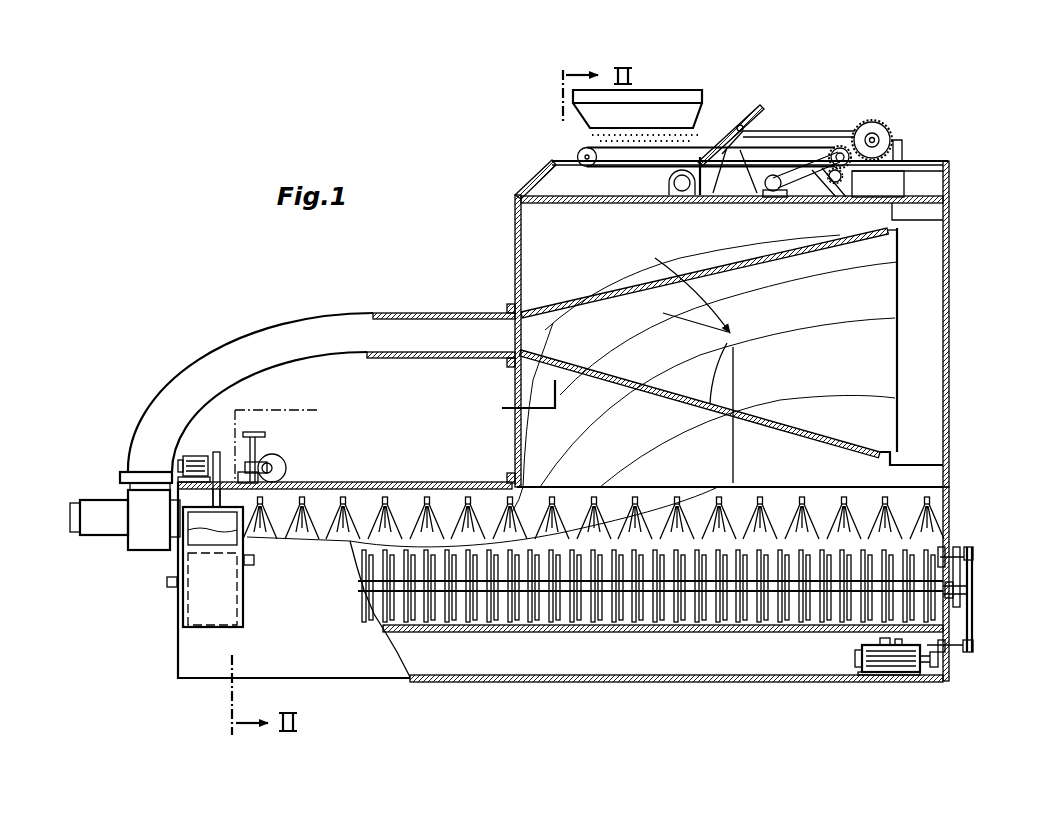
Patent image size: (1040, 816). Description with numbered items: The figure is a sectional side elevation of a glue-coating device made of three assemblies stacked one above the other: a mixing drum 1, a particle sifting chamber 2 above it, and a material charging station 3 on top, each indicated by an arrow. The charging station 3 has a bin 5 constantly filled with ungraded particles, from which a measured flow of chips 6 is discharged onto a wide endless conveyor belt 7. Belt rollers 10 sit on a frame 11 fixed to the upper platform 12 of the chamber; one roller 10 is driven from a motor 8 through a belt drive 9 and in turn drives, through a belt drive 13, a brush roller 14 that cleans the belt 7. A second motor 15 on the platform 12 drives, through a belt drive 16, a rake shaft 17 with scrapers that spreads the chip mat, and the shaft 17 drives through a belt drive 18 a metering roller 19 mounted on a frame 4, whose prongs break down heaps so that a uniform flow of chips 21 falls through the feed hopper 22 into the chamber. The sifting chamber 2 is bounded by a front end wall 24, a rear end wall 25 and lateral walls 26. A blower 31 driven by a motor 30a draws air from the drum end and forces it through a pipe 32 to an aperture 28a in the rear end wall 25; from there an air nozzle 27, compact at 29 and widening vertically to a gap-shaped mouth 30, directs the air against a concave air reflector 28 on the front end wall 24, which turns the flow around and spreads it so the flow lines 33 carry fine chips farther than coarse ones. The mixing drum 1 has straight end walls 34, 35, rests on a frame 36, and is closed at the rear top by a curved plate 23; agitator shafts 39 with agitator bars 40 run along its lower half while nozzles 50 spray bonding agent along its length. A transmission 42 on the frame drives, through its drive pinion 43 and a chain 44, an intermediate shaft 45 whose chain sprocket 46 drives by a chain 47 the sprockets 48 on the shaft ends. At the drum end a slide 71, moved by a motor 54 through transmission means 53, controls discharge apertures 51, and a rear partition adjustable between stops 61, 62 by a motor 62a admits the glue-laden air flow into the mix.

The mixing drum 1 is at (553, 660).
The particle sifting chamber 2 is at (962, 292).
The material charging station 3 is at (942, 124).
The frame 4 is at (905, 154).
The bin 5 is at (682, 98).
The flow of chips 6 is at (600, 133).
The conveyor belt 7 is at (628, 150).
The motor 8 is at (774, 178).
The belt drive 9 is at (804, 172).
The belt rollers 10 is at (580, 157).
The frame 11 is at (538, 180).
The upper platform 12 is at (623, 167).
The belt drive 13 is at (890, 172).
The brush roller 14 is at (820, 190).
The second motor 15 is at (672, 193).
The belt drive 16 is at (701, 196).
The rake shaft 17 is at (750, 112).
The belt drive 18 is at (858, 126).
The metering roller 19 is at (882, 138).
The flow of chips 21 is at (878, 206).
The feed hopper 22 is at (888, 184).
The curved plate 23 is at (322, 485).
The front end wall 24 is at (948, 501).
The rear end wall 25 is at (512, 455).
The lateral walls 26 is at (530, 272).
The air nozzle 27 is at (858, 392).
The air reflector 28 is at (938, 441).
The aperture 28a is at (512, 332).
The pipe cross section 29 is at (515, 380).
The mouth 30 is at (898, 374).
The motor 30a is at (100, 527).
The blower 31 is at (145, 535).
The pipe 32 is at (170, 386).
The flow lines 33 is at (704, 373).
The front end-wall 34 is at (942, 534).
The rear end-wall 35 is at (178, 656).
The frame 36 is at (652, 683).
The agitator shafts 39 is at (735, 592).
The agitator bars 40 is at (496, 608).
The transmission 42 is at (925, 670).
The drive pinion 43 is at (971, 652).
The chain 44 is at (973, 632).
The intermediate shaft 45 is at (974, 552).
The chain sprocket 46 is at (955, 556).
The chain 47 is at (958, 572).
The sprockets 48 is at (958, 599).
The nozzles 50 is at (468, 496).
The discharge apertures 51 is at (213, 553).
The transmission means 53 is at (165, 492).
The motor 54 is at (195, 458).
The stop 61 is at (243, 445).
The stop 62 is at (251, 566).
The motor 62a is at (282, 470).
The slide 71 is at (198, 607).